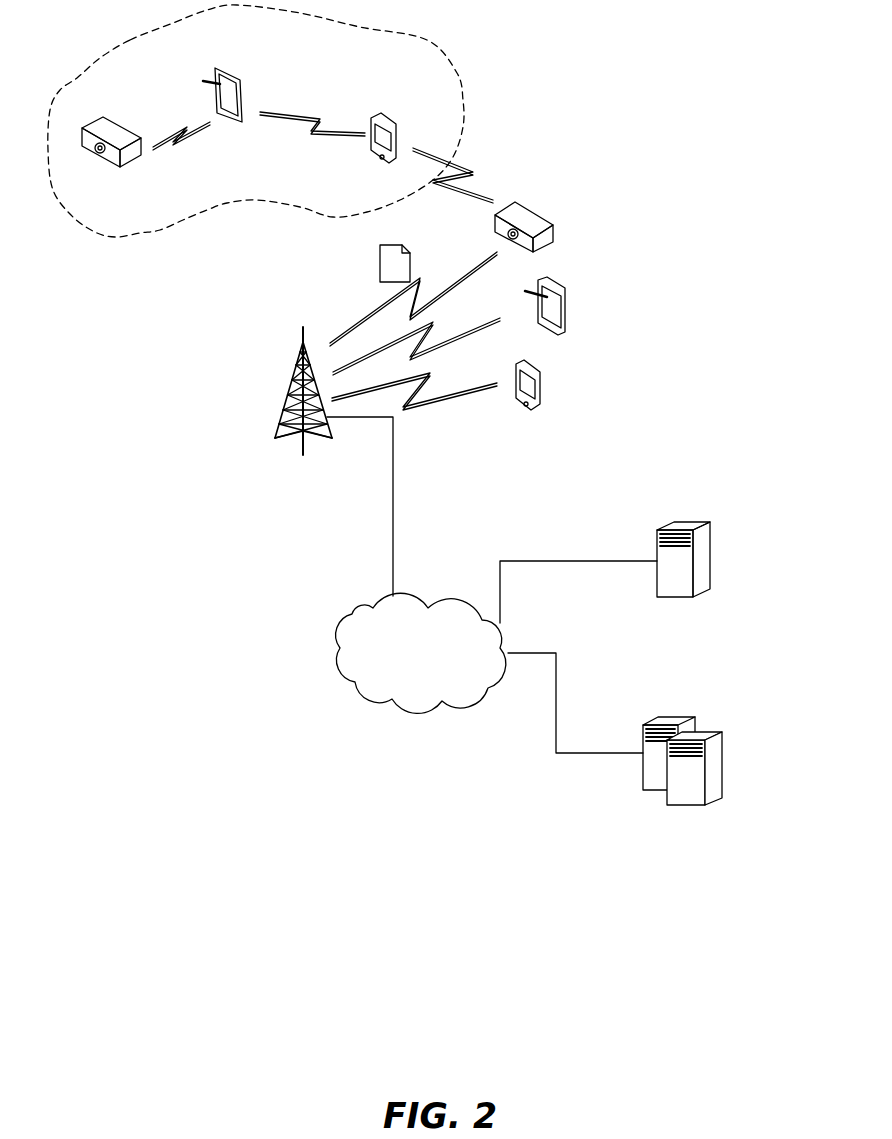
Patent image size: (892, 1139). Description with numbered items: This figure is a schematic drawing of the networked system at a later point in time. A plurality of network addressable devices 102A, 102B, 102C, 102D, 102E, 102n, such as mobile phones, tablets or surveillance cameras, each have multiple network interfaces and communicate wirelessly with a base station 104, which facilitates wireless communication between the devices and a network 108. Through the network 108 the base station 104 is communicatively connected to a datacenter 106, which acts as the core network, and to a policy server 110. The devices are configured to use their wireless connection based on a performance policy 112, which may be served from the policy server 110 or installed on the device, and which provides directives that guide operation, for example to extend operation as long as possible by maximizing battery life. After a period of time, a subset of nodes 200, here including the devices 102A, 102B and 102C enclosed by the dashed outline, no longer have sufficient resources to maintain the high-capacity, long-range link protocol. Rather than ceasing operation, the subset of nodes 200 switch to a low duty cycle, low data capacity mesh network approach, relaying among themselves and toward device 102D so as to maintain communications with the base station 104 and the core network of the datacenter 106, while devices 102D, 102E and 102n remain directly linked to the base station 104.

The subset of nodes 200 is at (365, 30).
The network addressable device 102A is at (104, 118).
The network addressable device 102B is at (225, 80).
The network addressable device 102C is at (376, 118).
The network addressable device 102D is at (519, 204).
The network addressable device 102E is at (557, 283).
The network addressable device 102n is at (530, 363).
The performance policy 112 is at (412, 255).
The base station 104 is at (295, 378).
The network 108 is at (410, 594).
The policy server 110 is at (712, 557).
The datacenter 106 is at (722, 740).